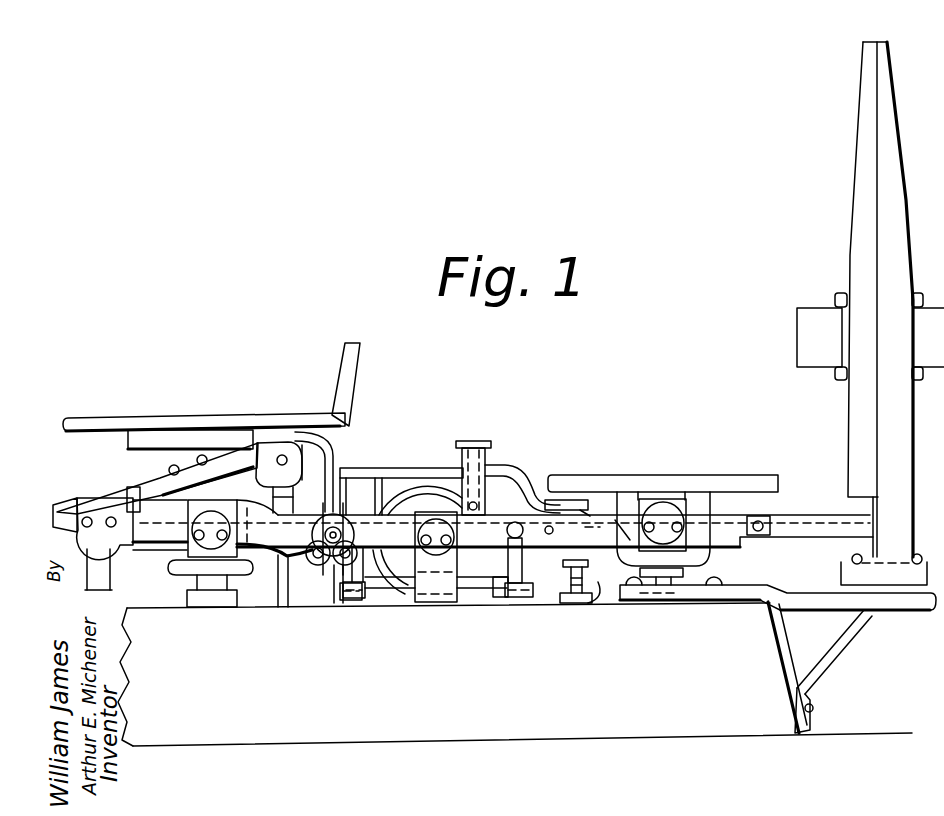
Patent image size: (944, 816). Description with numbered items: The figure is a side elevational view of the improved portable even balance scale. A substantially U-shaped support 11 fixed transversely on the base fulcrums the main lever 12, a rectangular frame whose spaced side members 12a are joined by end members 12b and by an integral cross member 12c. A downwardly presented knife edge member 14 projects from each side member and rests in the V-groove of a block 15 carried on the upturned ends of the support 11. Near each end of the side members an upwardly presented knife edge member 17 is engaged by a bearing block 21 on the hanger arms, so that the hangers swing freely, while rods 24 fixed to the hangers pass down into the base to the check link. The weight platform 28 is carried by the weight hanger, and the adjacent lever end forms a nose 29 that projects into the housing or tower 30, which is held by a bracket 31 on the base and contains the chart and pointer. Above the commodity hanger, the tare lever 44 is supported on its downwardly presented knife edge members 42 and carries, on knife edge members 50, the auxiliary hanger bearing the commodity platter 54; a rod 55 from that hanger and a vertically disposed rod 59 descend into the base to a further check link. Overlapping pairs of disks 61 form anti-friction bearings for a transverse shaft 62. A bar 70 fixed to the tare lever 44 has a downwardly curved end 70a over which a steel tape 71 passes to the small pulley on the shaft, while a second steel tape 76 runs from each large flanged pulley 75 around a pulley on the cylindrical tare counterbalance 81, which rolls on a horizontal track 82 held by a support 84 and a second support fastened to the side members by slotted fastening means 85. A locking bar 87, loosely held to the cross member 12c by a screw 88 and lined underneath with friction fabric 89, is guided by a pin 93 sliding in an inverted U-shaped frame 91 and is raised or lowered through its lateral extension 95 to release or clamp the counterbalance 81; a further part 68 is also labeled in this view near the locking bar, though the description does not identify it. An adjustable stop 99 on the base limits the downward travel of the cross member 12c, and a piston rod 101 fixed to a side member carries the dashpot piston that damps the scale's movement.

The support 11 is at (457, 602).
The lever 12 is at (697, 525).
The side member 12a is at (487, 534).
The end member 12b is at (737, 537).
The cross member 12c is at (585, 538).
The knife edge member 14 is at (445, 580).
The block 15 is at (414, 585).
The knife edge member 17 is at (657, 515).
The bearing block 21 is at (662, 502).
The rod 24 is at (684, 589).
The weight platform 28 is at (745, 478).
The extension or nose 29 is at (813, 534).
The housing 30 is at (857, 193).
The bracket 31 is at (895, 612).
The knife edge member 42 is at (93, 513).
The tare lever 44 is at (168, 478).
The knife edge member 50 is at (282, 455).
The commodity platter 54 is at (352, 361).
The rod 55 is at (280, 593).
The rod 59 is at (110, 588).
The disk 61 is at (283, 592).
The shaft 62 is at (274, 532).
The frame plate 68 is at (351, 492).
The bar 70 is at (217, 460).
The curved end 70a is at (307, 436).
The steel tape 71 is at (348, 480).
The flanged pulley 75 is at (312, 513).
The steel tape 76 is at (378, 598).
The tare counterbalance 81 is at (410, 490).
The track 82 is at (500, 597).
The support 84 is at (528, 598).
The fastening means 85 is at (515, 522).
The locking bar 87 is at (513, 465).
The screw 88 is at (556, 500).
The fabric 89 is at (385, 470).
The inverted U-shaped frame 91 is at (483, 445).
The pin 93 is at (462, 442).
The extension 95 is at (348, 466).
The adjustable stop 99 is at (598, 606).
The piston rod 101 is at (574, 606).